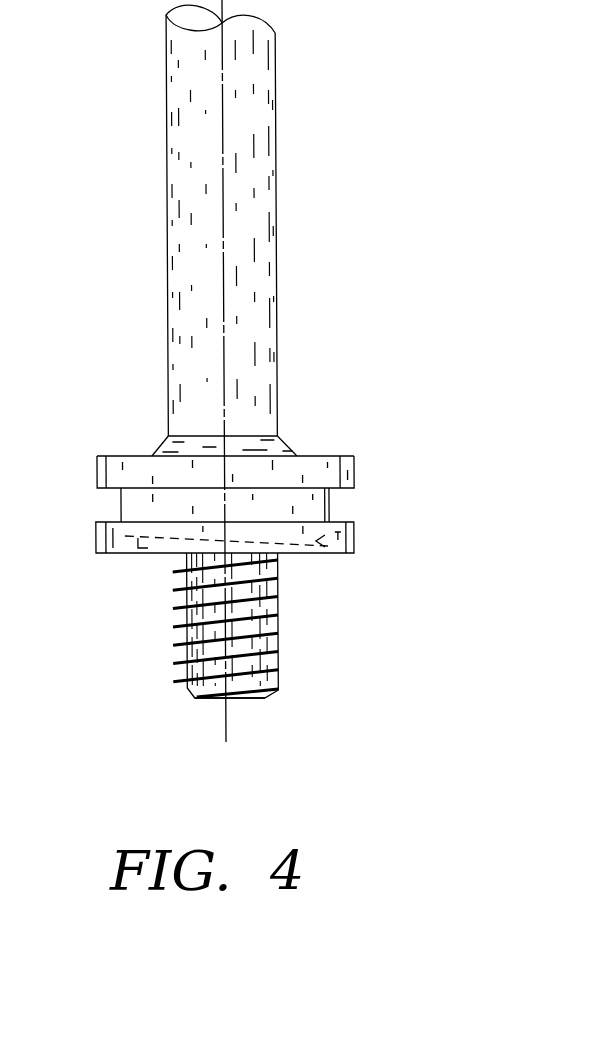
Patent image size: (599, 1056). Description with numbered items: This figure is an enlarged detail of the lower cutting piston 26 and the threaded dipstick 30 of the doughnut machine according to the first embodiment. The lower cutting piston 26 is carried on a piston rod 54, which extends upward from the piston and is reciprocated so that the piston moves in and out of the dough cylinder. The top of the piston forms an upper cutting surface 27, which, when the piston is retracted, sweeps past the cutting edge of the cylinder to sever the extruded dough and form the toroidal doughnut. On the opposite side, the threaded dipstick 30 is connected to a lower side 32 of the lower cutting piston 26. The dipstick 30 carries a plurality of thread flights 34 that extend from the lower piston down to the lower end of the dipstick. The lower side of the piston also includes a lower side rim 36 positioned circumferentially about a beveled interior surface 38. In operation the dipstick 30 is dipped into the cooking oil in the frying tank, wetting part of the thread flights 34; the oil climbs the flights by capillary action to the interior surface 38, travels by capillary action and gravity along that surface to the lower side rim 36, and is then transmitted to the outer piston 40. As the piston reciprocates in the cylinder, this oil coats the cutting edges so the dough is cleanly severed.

The piston rod 54 is at (267, 137).
The upper cutting surface 27 is at (342, 456).
The lower cutting piston 26 is at (96, 480).
The beveled interior surface 38 is at (350, 523).
The lower side rim 36 is at (332, 553).
The outer piston 40 is at (351, 542).
The thread flights 34 is at (254, 625).
The lower side 32 is at (184, 617).
The threaded dipstick 30 is at (229, 700).